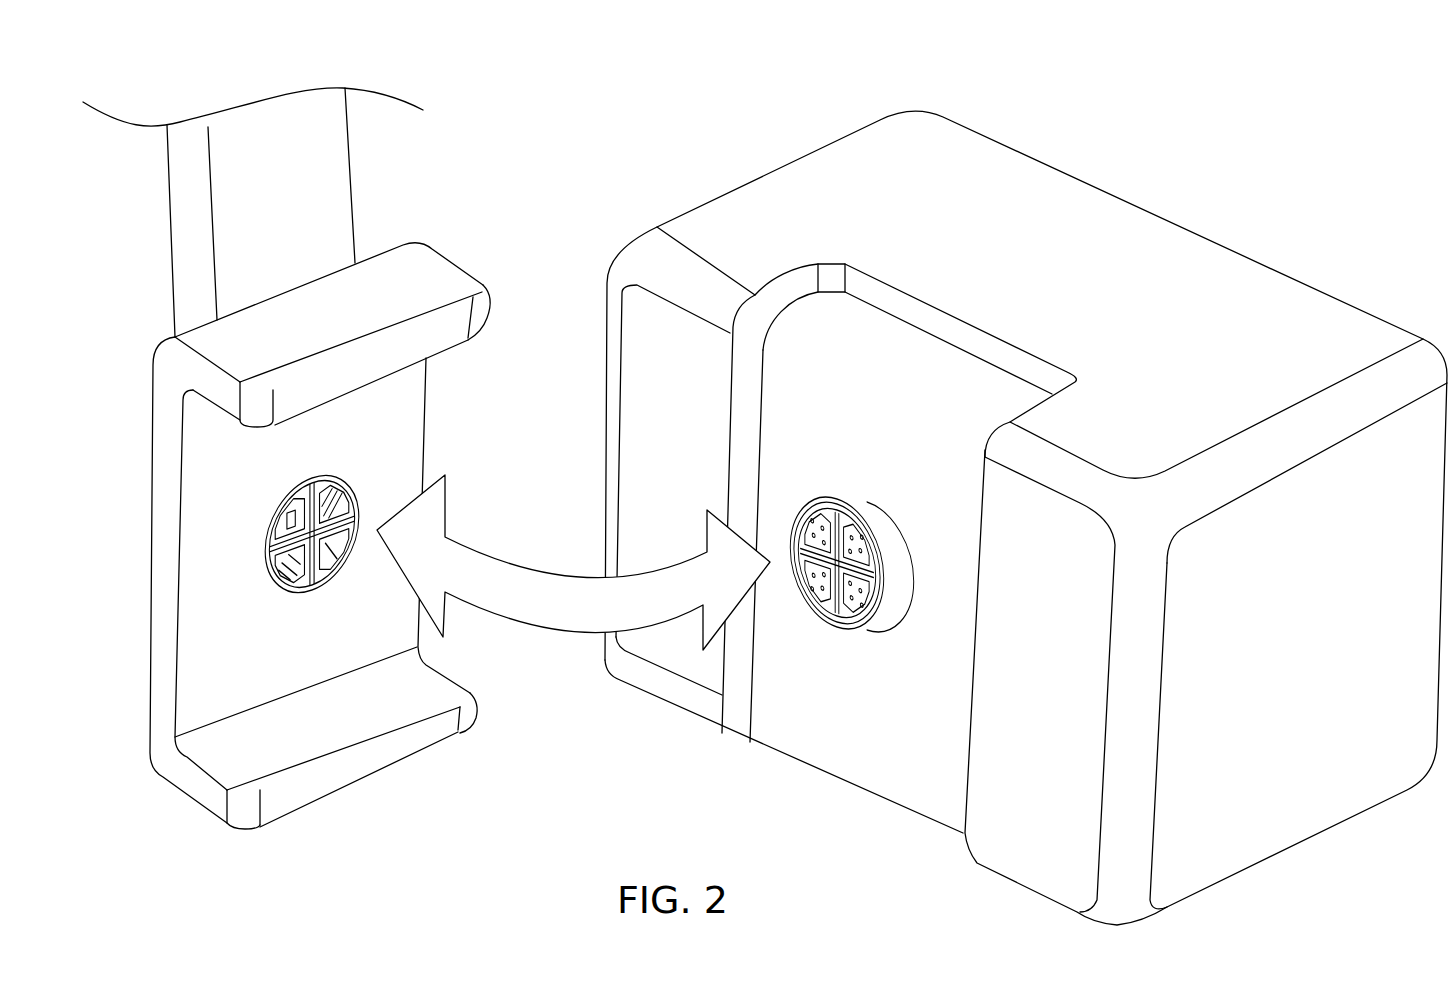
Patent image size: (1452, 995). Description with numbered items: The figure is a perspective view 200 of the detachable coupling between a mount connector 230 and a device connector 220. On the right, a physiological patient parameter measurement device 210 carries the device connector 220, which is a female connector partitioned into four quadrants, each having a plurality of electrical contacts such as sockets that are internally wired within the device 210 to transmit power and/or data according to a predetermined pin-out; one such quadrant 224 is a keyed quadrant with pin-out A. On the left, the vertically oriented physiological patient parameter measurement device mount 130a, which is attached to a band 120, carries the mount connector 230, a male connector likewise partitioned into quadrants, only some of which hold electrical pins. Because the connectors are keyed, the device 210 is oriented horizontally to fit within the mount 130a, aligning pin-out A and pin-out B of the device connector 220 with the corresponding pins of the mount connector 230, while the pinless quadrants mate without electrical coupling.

The band 120 is at (178, 268).
The physiological patient parameter measurement device mount 130a is at (420, 253).
The perspective view 200 is at (1305, 105).
The physiological patient parameter measurement device 210 is at (1188, 228).
The device connector 220 is at (845, 561).
The quadrant 224 is at (878, 622).
The mount connector 230 is at (315, 535).